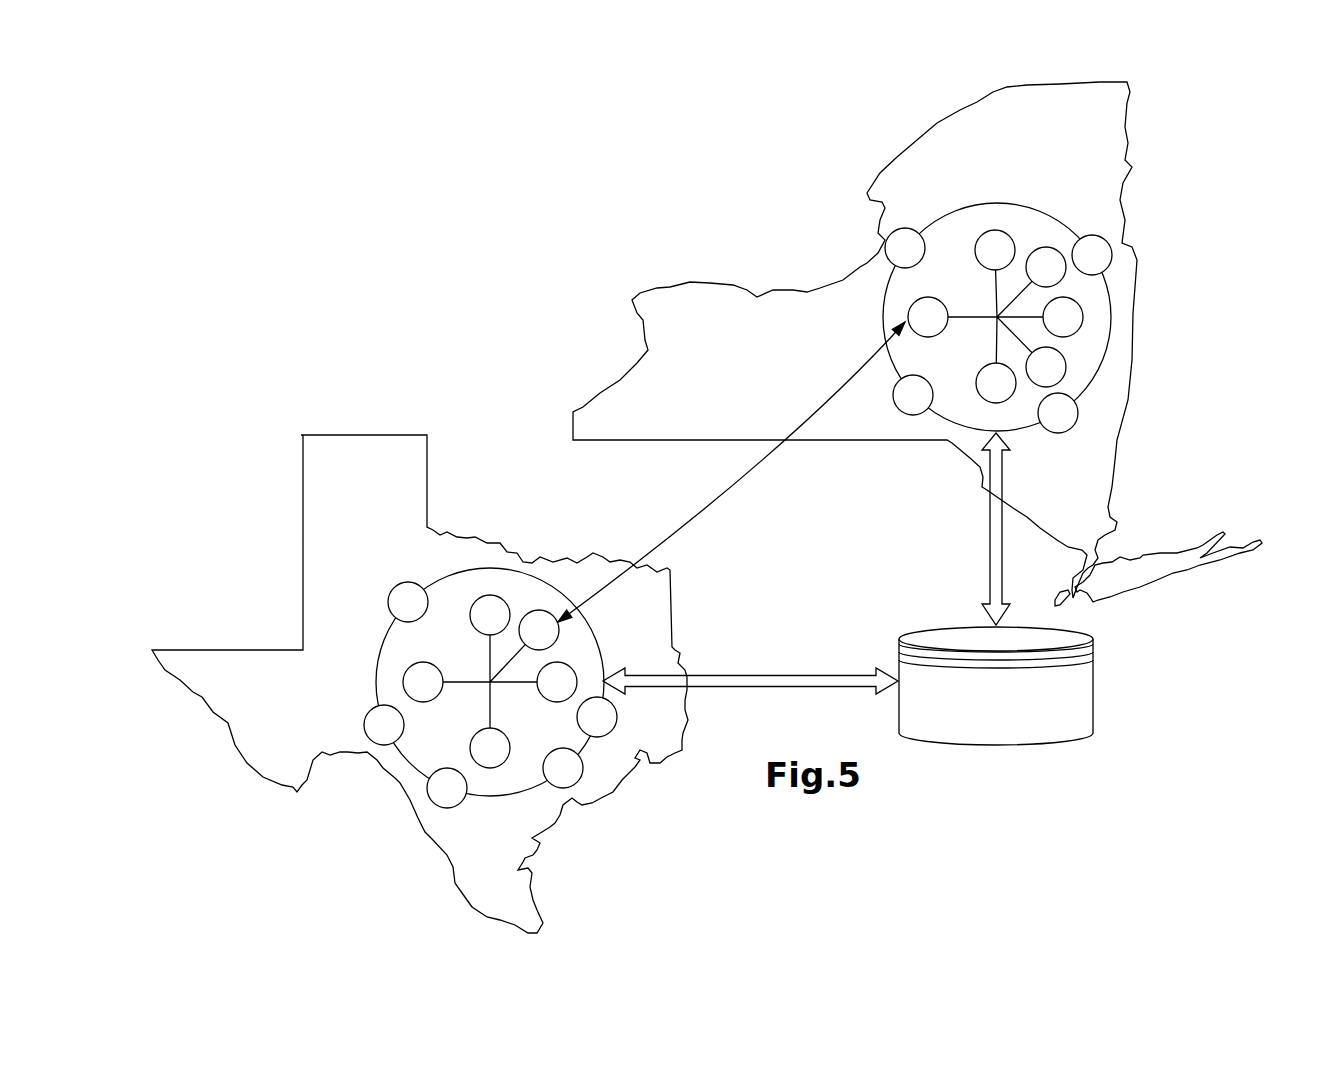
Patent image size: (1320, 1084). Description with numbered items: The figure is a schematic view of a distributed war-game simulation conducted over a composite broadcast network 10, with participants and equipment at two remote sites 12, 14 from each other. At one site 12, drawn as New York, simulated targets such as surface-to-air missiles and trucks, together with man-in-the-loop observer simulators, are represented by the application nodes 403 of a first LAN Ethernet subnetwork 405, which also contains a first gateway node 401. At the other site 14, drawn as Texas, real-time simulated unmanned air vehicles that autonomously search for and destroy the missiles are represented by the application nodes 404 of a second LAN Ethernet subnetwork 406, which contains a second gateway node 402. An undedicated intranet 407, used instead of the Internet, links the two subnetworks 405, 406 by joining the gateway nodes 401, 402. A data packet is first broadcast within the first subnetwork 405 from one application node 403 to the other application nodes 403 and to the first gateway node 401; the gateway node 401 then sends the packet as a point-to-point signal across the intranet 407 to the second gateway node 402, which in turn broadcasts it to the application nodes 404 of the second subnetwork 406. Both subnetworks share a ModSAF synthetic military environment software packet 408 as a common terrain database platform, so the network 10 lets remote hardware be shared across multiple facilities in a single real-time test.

The composite broadcast network 10 is at (1162, 248).
The first site 12 is at (1003, 110).
The second site 14 is at (253, 710).
The first gateway node 401 is at (928, 297).
The second gateway node 402 is at (560, 636).
The application node of the first subnetwork 403 is at (620, 815).
The application node of the second subnetwork 404 is at (512, 823).
The first subnetwork 405 is at (1040, 203).
The second subnetwork 406 is at (437, 578).
The undedicated intranet 407 is at (778, 455).
The synthetic military environment software packet (ModSAF) 408 is at (988, 745).